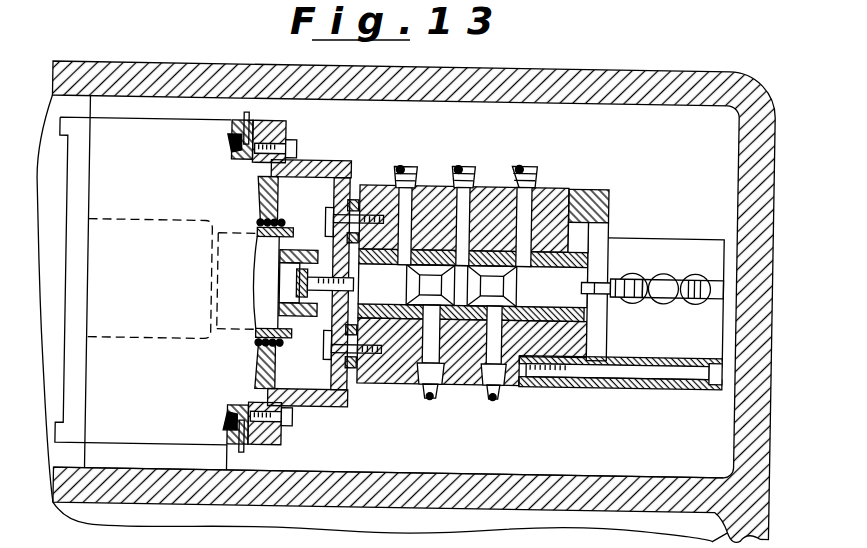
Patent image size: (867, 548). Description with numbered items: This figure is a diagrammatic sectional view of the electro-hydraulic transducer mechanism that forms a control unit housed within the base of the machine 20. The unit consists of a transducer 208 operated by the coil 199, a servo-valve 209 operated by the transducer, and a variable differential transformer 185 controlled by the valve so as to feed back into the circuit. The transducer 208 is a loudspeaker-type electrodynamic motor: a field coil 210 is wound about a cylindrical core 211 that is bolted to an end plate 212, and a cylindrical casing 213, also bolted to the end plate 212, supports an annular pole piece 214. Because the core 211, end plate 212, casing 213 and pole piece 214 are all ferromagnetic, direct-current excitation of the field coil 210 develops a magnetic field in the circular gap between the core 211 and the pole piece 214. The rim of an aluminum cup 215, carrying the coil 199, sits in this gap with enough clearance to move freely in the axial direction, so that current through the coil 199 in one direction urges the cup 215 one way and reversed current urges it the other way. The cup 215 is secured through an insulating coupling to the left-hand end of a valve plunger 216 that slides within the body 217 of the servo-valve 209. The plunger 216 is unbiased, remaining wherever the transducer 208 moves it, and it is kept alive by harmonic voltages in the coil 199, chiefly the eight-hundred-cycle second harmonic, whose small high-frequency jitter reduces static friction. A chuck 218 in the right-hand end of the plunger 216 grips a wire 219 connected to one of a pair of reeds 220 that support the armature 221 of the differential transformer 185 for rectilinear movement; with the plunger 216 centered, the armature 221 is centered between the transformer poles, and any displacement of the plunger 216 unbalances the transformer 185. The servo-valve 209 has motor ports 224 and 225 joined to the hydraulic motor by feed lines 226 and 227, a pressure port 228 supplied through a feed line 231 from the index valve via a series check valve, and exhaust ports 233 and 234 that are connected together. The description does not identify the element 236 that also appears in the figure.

The machine 20 is at (548, 62).
The variable differential transformer 185 is at (651, 211).
The coil 199 is at (289, 213).
The transducer 208 is at (316, 141).
The servo-valve 209 is at (528, 165).
The field coil 210 is at (261, 119).
The cylindrical core 211 is at (117, 302).
The end plate 212 is at (87, 185).
The cylindrical casing 213 is at (161, 431).
The annular pole piece 214 is at (298, 406).
The aluminum cup 215 is at (299, 336).
The valve plunger 216 is at (378, 268).
The body 217 is at (464, 371).
The chuck 218 is at (594, 275).
The wire 219 is at (599, 284).
The reeds 220 is at (694, 297).
The armature 221 is at (680, 280).
The motor port 224 is at (428, 357).
The motor port 225 is at (508, 365).
The feed line 226 is at (433, 396).
The feed line 227 is at (498, 395).
The pressure port 228 is at (442, 202).
The feed line 231 is at (463, 158).
The exhaust port 233 is at (525, 205).
The exhaust port 234 is at (453, 159).
The seal rings 236 is at (394, 164).